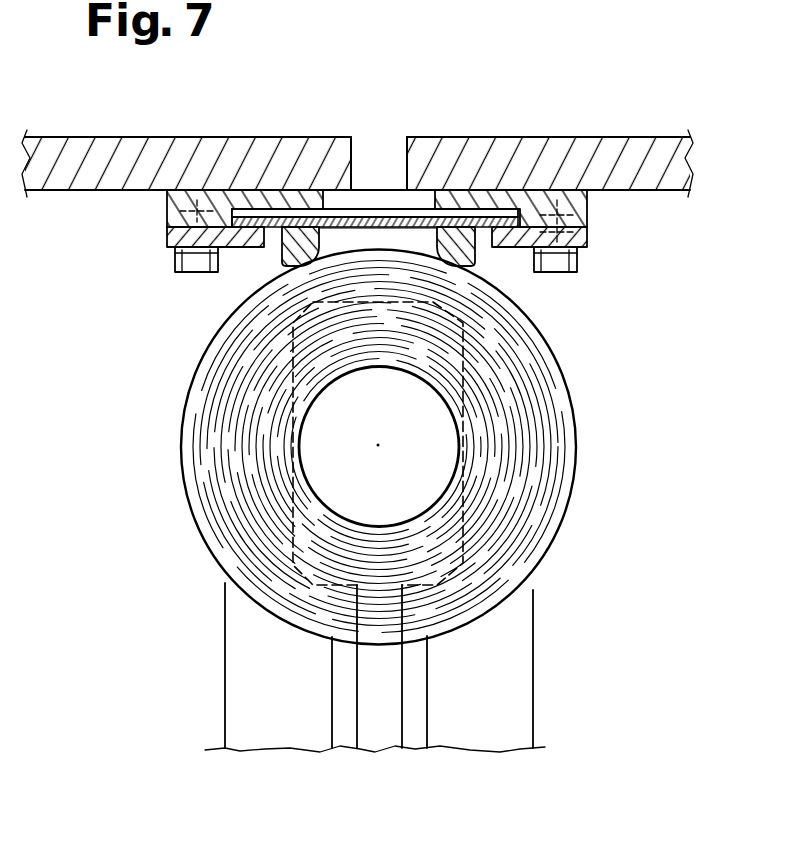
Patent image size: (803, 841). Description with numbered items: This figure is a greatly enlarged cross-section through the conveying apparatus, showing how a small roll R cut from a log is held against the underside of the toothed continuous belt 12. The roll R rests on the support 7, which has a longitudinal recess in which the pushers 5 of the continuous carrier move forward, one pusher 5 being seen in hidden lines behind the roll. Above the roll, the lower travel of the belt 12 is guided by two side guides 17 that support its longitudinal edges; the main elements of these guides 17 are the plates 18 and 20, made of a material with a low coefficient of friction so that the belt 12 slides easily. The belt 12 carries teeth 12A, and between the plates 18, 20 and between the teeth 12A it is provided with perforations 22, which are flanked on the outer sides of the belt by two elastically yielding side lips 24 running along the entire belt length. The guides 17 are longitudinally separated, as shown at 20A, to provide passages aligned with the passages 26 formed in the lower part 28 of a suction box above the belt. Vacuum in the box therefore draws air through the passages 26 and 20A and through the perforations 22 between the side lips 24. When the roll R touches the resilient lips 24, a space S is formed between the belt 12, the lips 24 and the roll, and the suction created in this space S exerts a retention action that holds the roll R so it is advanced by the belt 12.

The lower part of suction box 28 is at (118, 147).
The passages 26 is at (362, 140).
The plate 20 is at (167, 213).
The longitudinal separation 20A is at (380, 200).
The teeth 12A is at (470, 203).
The continuous belt 12 is at (520, 253).
The side guides 17 is at (163, 238).
The plate 18 is at (242, 247).
The perforations 22 is at (422, 230).
The side lips 24 is at (262, 280).
The space S is at (345, 240).
The small rolls R is at (192, 393).
The pushers 5 is at (290, 526).
The support 7 is at (216, 641).